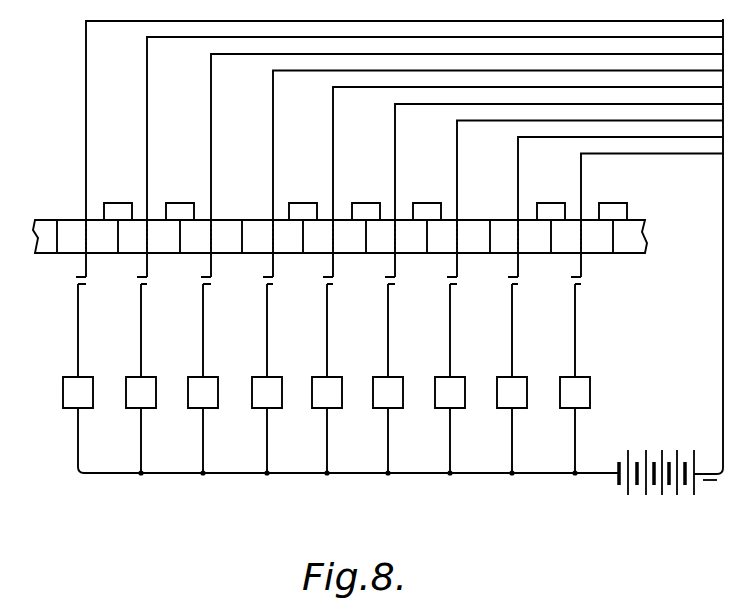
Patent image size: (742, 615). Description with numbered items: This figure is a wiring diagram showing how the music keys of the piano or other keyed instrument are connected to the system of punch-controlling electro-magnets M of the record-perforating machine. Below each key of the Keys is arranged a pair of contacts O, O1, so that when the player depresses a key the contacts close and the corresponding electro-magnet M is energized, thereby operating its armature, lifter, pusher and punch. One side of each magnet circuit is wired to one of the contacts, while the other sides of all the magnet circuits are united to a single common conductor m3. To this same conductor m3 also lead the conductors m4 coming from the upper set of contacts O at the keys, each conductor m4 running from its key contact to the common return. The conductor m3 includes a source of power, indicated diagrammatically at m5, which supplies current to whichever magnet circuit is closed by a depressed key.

The conductors m4 is at (685, 137).
The music keys Keys is at (340, 227).
The contact O is at (513, 262).
The contact O1 is at (388, 285).
The electro-magnet M is at (382, 377).
The single conductor m3 is at (306, 474).
The source of power m5 is at (658, 491).